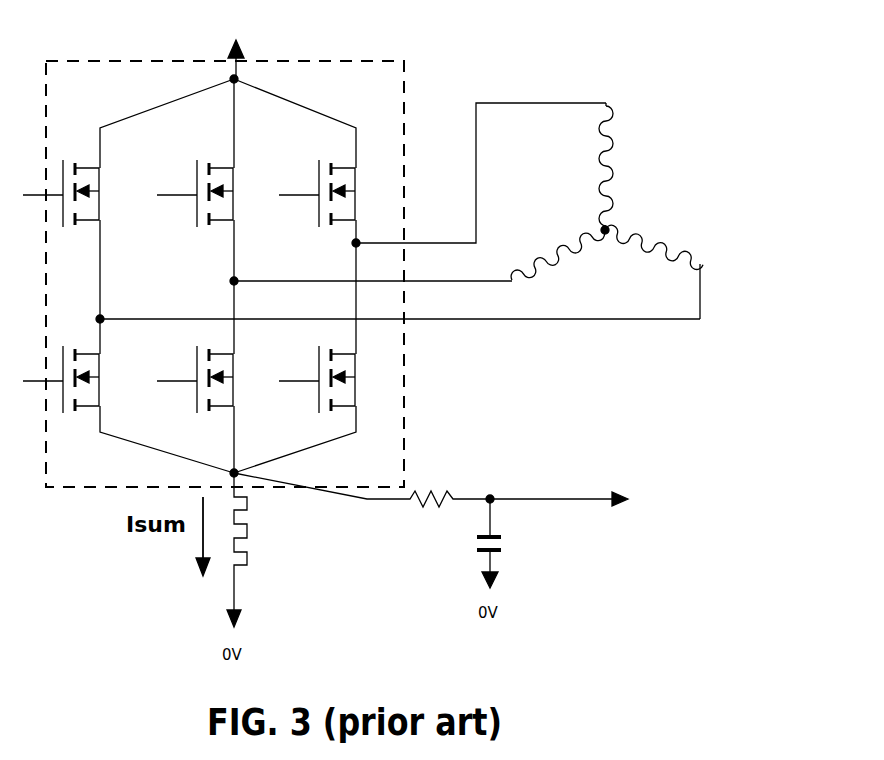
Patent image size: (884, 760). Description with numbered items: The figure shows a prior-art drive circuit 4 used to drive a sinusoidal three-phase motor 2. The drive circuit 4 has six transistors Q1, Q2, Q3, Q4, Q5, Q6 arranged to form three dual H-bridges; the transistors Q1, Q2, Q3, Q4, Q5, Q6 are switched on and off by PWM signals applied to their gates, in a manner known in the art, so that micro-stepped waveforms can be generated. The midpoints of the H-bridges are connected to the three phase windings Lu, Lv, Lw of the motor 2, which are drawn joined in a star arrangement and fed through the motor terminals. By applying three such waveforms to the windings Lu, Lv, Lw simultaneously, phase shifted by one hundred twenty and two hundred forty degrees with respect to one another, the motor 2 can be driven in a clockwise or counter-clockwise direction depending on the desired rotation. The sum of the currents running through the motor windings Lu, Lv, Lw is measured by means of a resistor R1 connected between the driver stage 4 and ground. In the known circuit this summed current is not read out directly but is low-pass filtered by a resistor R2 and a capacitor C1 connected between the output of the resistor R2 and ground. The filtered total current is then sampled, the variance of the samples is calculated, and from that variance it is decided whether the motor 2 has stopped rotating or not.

The three-phase motor 2 is at (609, 198).
The drive circuit 4 is at (224, 245).
The transistor Q1 is at (80, 191).
The transistor Q2 is at (214, 191).
The transistor Q3 is at (335, 191).
The transistor Q4 is at (80, 379).
The transistor Q5 is at (214, 379).
The transistor Q6 is at (335, 379).
The resistor R1 is at (255, 544).
The resistor R2 is at (423, 485).
The capacitor C1 is at (510, 536).
The phase winding Lu is at (592, 166).
The phase winding Lv is at (654, 266).
The phase winding Lw is at (558, 260).